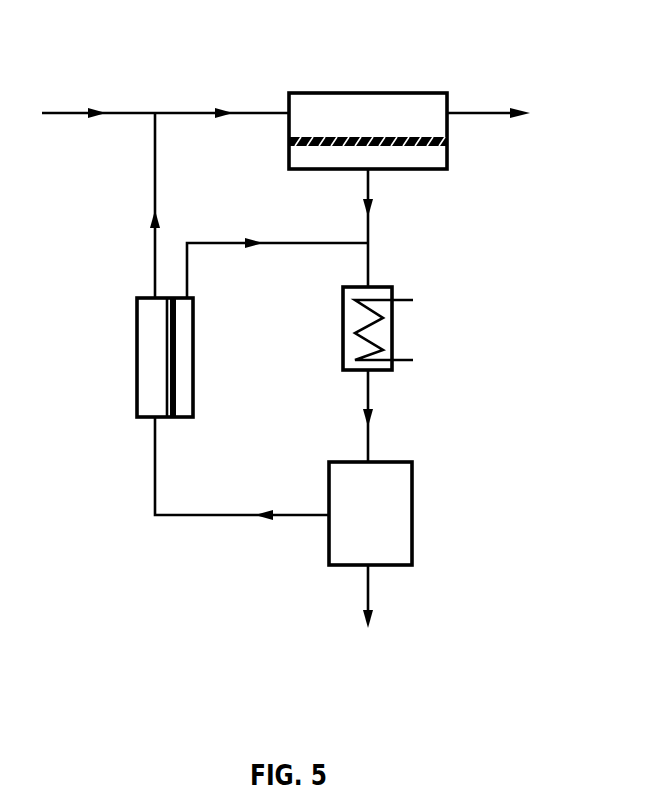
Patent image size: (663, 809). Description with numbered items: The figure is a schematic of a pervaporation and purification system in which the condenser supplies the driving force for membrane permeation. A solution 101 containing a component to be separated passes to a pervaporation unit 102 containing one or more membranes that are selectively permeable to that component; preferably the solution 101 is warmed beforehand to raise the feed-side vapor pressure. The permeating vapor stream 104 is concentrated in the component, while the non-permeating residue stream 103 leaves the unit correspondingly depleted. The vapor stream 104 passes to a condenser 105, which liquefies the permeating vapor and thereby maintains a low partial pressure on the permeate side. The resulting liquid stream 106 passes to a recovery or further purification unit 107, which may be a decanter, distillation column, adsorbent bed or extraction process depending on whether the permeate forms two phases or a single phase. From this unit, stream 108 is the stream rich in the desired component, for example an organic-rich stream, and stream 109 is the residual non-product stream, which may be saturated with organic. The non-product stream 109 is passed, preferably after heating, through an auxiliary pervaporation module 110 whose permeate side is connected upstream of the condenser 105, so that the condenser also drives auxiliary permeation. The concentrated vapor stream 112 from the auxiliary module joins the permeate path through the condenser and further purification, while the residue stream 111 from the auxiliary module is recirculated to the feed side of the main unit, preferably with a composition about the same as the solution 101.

The solution 101 is at (165, 96).
The pervaporation unit 102 is at (359, 93).
The residue stream 103 is at (512, 115).
The vapor stream 104 is at (395, 228).
The condenser 105 is at (380, 288).
The liquid stream 106 is at (393, 416).
The further purification unit 107 is at (412, 465).
The product stream 108 is at (367, 616).
The non-product stream 109 is at (242, 487).
The auxiliary pervaporation module 110 is at (137, 392).
The residue stream from auxiliary module 111 is at (127, 205).
The concentrated vapor stream 112 is at (277, 254).